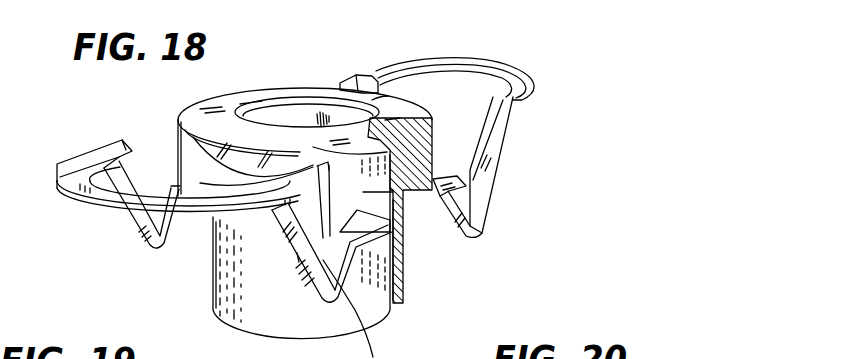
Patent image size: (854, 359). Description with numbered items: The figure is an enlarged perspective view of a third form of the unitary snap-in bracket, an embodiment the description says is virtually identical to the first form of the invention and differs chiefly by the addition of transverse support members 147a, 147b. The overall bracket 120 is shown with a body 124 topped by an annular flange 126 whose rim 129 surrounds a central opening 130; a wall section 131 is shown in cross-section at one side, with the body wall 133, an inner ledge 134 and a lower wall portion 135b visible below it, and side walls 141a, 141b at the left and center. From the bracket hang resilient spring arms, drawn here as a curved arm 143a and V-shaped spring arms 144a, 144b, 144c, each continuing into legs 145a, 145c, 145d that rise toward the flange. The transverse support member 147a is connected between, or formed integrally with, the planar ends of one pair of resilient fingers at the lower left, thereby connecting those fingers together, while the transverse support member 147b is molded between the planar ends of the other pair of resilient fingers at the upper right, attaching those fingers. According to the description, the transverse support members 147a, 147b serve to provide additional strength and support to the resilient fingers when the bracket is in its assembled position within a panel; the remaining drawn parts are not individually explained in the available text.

The spring clip assembly 120 is at (258, 68).
The cylindrical body 124 is at (203, 320).
The annular flange 126 is at (270, 114).
The rim 129 is at (380, 97).
The central opening 130 is at (305, 90).
The wall section 131 is at (413, 133).
The body wall 133 is at (208, 257).
The inner ledge 134 is at (393, 192).
The wall portion 135b is at (397, 250).
The side wall 141a is at (192, 168).
The side wall 141b is at (297, 253).
The curved arm 143a is at (200, 183).
The V-shaped spring arm 144a is at (180, 231).
The V-shaped spring arm 144b is at (343, 297).
The V-shaped spring arm 144c is at (465, 207).
The leg 145a is at (133, 155).
The leg 145c is at (498, 128).
The leg 145d is at (378, 78).
The transverse support member 147a is at (93, 203).
The transverse support member 147b is at (517, 77).